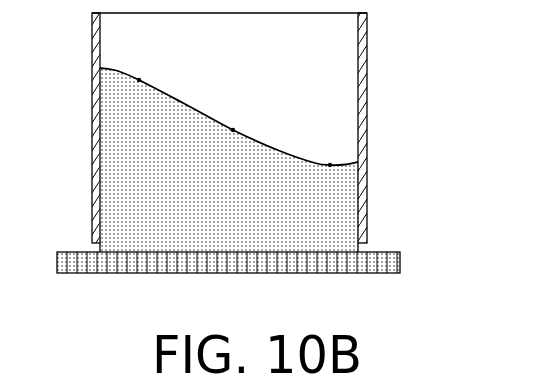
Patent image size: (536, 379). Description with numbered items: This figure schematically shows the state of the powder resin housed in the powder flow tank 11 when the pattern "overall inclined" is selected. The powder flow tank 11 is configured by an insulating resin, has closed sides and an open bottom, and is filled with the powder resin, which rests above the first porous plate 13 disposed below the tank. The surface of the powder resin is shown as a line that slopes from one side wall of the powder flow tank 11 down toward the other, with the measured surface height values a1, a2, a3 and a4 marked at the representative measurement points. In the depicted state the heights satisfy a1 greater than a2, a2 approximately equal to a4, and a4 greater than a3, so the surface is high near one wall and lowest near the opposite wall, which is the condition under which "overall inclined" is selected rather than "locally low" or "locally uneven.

The powder flow tank 11 is at (366, 50).
The first porous plate 13 is at (398, 263).
The surface height measurement value a1 is at (140, 60).
The surface height measurement value a2 is at (235, 116).
The surface height measurement value a3 is at (331, 151).
The surface height measurement value a4 is at (236, 153).